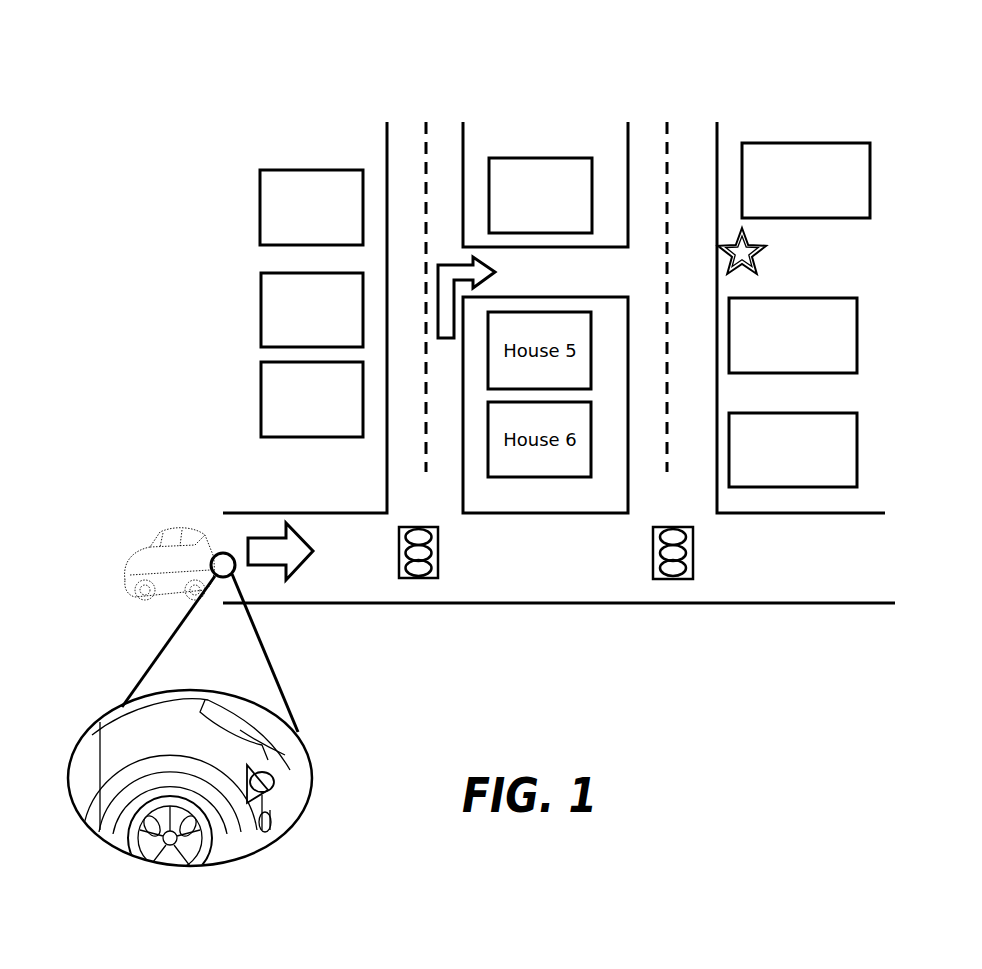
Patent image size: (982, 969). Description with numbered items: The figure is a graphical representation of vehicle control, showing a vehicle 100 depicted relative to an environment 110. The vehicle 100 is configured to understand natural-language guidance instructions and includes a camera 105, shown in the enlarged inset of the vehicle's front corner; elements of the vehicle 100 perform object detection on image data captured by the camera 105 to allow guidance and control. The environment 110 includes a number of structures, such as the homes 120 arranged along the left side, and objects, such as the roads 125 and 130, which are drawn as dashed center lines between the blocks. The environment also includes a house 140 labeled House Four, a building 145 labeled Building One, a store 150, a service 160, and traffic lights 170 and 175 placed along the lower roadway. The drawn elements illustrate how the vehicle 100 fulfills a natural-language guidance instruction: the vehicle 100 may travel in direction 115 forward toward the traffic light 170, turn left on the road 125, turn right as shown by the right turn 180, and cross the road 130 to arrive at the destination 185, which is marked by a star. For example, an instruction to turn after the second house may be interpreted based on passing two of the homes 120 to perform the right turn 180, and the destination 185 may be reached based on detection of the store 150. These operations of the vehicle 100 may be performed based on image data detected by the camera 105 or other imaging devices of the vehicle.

The vehicle 100 is at (135, 553).
The camera 105 is at (275, 782).
The environment 110 is at (262, 66).
The direction 115 is at (300, 555).
The homes 120 is at (230, 191).
The road 125 is at (437, 133).
The road 130 is at (693, 148).
The house 140 is at (578, 160).
The building 145 is at (870, 172).
The store 150 is at (857, 340).
The service 160 is at (857, 440).
The traffic light 170 is at (440, 553).
The traffic light 175 is at (695, 553).
The right turn 180 is at (495, 275).
The destination 185 is at (760, 258).